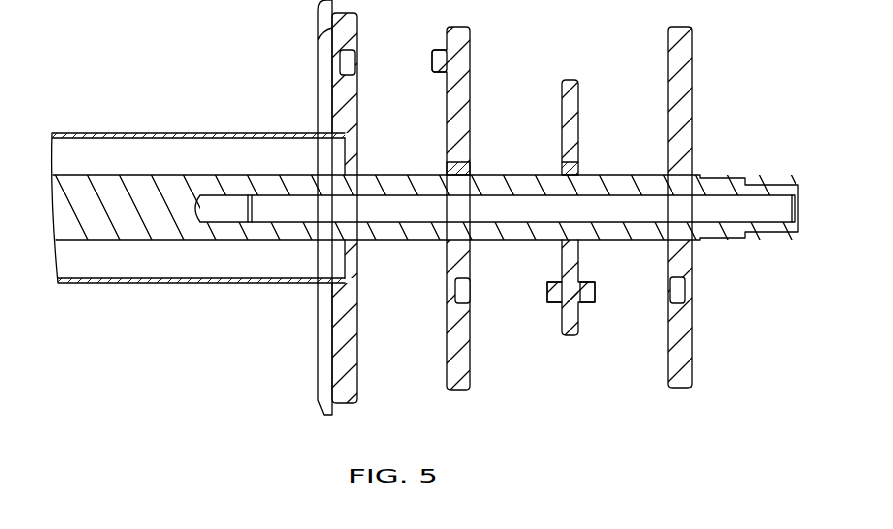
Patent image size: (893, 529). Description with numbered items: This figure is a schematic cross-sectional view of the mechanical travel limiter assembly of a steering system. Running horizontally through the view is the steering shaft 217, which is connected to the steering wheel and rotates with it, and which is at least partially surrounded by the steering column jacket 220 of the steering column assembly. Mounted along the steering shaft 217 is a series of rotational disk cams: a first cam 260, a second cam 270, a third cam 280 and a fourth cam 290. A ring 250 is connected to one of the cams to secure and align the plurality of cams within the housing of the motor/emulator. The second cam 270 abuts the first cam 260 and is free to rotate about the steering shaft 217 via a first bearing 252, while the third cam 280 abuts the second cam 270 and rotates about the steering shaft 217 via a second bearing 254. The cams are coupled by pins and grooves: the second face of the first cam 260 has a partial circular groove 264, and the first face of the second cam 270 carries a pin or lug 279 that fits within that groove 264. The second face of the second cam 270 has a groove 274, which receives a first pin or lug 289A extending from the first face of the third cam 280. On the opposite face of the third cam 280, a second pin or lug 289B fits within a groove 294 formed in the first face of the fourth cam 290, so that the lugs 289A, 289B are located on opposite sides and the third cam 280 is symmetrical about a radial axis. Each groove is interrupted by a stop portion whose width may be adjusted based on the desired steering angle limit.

The steering shaft 217 is at (162, 227).
The steering column jacket 220 is at (208, 267).
The ring 250 is at (321, 349).
The first bearing 252 is at (478, 170).
The second bearing 254 is at (584, 171).
The first cam 260 is at (372, 208).
The groove 264 is at (345, 56).
The second cam 270 is at (472, 198).
The groove 274 is at (458, 283).
The pin or lug 279 is at (440, 61).
The third cam 280 is at (570, 234).
The first pin or lug 289A is at (548, 290).
The second pin or lug 289B is at (585, 293).
The fourth cam 290 is at (682, 210).
The groove 294 is at (672, 287).